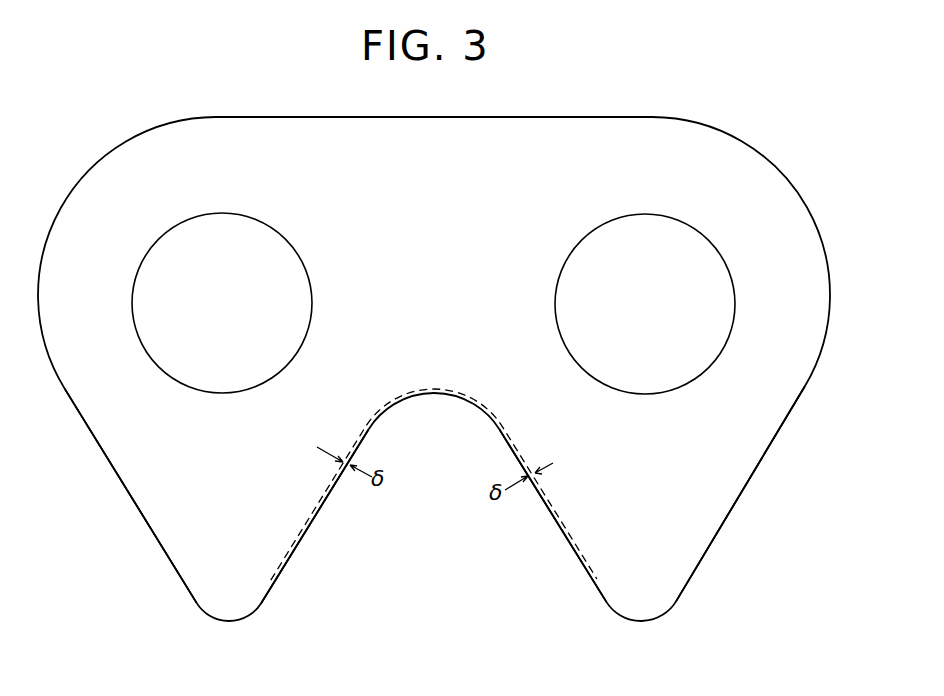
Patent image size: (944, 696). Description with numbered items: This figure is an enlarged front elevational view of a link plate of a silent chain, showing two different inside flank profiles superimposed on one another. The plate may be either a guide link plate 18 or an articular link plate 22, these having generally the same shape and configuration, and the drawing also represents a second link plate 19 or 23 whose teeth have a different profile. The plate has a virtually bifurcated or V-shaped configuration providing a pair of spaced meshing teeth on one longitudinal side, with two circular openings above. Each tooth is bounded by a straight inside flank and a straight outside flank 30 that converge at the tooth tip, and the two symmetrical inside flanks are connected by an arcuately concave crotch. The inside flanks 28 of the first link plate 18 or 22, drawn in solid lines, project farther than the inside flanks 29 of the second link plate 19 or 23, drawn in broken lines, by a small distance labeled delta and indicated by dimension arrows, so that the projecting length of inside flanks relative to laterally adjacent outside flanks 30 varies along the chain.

The guide link plate 18 is at (434, 369).
The articular link plate 22 is at (779, 602).
The second link plate 19 is at (803, 482).
The second link plate 23 is at (848, 498).
The inside flank 28 is at (290, 563).
The inside flank 29 is at (312, 522).
The outside flank 30 is at (138, 513).